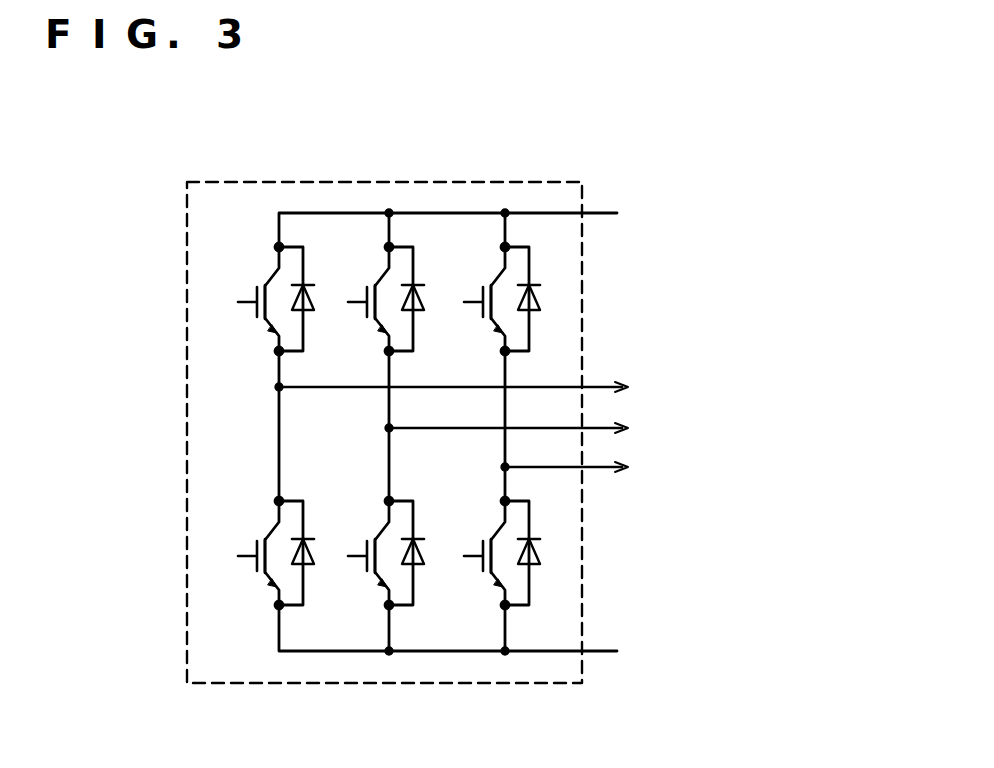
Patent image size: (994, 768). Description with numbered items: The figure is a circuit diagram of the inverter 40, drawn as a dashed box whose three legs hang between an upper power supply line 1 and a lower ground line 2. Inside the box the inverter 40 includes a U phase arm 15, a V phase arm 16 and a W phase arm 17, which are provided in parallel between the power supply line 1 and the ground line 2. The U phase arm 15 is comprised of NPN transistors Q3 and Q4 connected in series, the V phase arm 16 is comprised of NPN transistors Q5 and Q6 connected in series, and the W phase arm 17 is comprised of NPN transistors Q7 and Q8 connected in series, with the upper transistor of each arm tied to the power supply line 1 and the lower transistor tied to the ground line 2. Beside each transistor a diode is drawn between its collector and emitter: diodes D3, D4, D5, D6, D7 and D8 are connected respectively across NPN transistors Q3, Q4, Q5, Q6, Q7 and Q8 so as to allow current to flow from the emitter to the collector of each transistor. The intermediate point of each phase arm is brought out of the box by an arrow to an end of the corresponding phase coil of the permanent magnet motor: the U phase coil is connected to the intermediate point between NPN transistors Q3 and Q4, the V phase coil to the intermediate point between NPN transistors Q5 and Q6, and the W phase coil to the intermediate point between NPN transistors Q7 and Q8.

The inverter 40 is at (332, 182).
The power supply line 1 is at (600, 214).
The ground line 2 is at (600, 651).
The U phase arm 15 is at (262, 400).
The V phase arm 16 is at (374, 439).
The W phase arm 17 is at (491, 481).
The NPN transistor Q3 is at (253, 299).
The NPN transistor Q4 is at (253, 553).
The NPN transistor Q5 is at (363, 299).
The NPN transistor Q6 is at (363, 553).
The NPN transistor Q7 is at (479, 299).
The NPN transistor Q8 is at (479, 553).
The diode D3 is at (309, 299).
The diode D4 is at (309, 553).
The diode D5 is at (419, 299).
The diode D6 is at (419, 553).
The diode D7 is at (535, 299).
The diode D8 is at (535, 553).